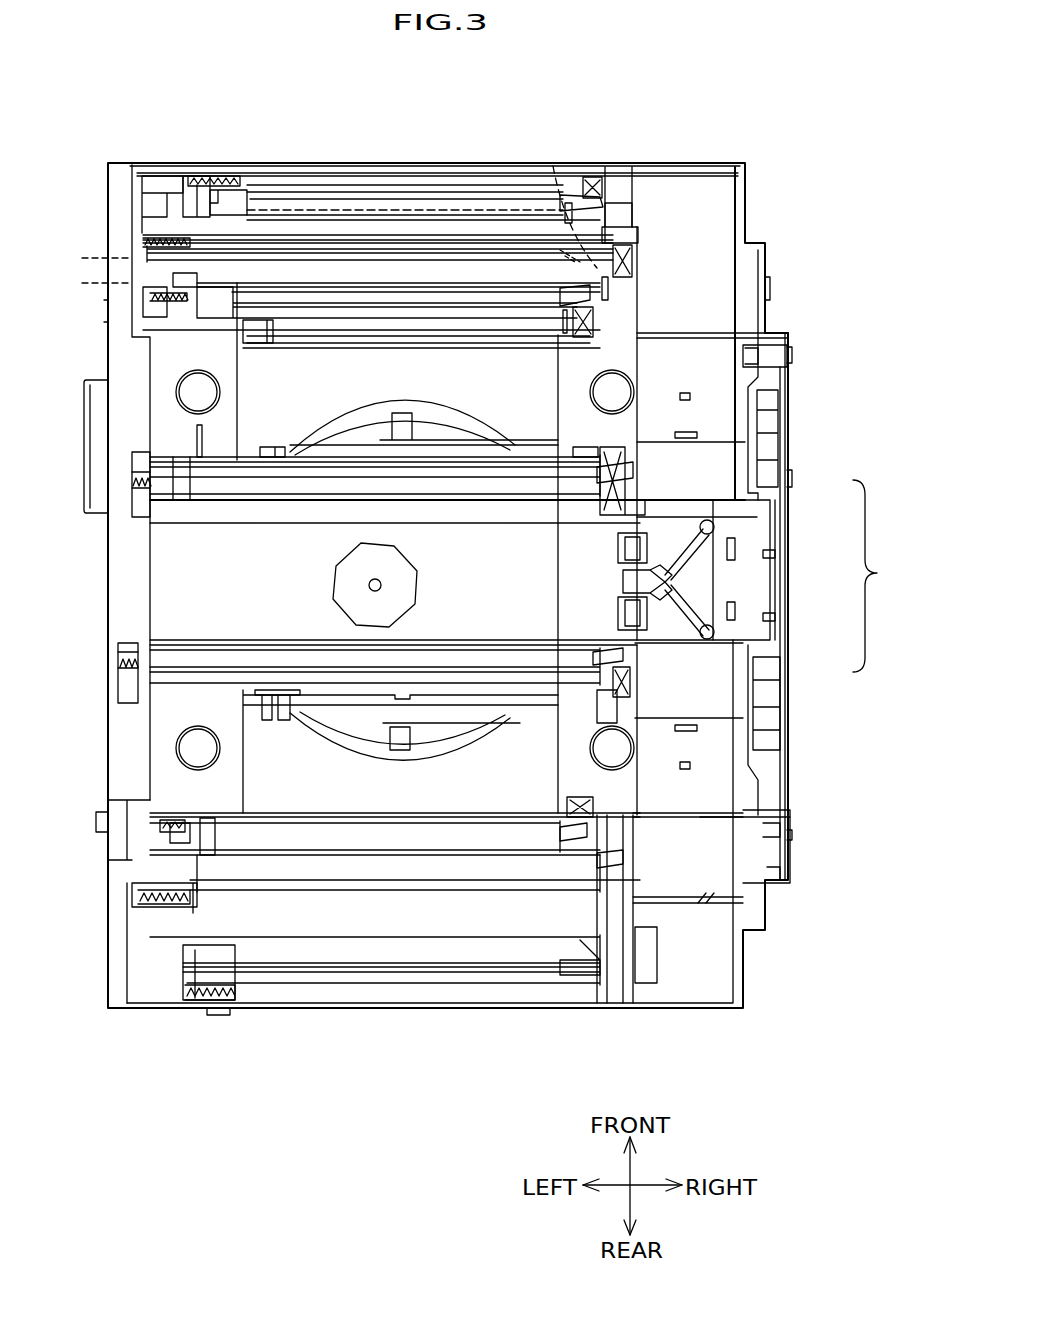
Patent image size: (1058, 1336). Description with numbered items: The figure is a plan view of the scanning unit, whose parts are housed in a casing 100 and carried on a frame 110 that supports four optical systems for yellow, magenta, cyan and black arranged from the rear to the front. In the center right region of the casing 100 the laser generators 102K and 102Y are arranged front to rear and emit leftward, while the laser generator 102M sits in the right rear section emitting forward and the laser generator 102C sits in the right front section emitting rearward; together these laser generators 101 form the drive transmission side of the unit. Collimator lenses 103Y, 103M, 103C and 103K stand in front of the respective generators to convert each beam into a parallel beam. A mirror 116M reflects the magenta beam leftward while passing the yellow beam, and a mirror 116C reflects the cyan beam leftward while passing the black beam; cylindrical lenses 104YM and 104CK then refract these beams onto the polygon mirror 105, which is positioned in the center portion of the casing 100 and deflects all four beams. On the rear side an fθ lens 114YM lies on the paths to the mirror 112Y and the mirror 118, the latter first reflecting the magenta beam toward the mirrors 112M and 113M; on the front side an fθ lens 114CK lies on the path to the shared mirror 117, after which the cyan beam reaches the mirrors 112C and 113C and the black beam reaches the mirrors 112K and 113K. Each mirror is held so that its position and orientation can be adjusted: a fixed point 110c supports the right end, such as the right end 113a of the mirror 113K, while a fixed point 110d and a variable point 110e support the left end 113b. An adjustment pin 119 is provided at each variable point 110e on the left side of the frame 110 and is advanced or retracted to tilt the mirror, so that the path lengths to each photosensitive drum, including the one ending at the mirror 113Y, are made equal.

The casing 100 is at (473, 126).
The laser generators 101 is at (885, 576).
The laser generator 102C is at (760, 420).
The laser generator 102K is at (787, 541).
The laser generator 102Y is at (787, 608).
The laser generator 102M is at (700, 742).
The collimator lens 103C is at (685, 432).
The collimator lens 103K is at (730, 540).
The collimator lens 103Y is at (680, 645).
The collimator lens 103M is at (680, 735).
The cylindrical lens 104CK is at (643, 553).
The cylindrical lens 104YM is at (635, 610).
The polygon mirror 105 is at (355, 580).
The frame 110 is at (100, 707).
The fixed point 110c is at (556, 162).
The fixed point 110d is at (81, 282).
The variable point 110e is at (81, 254).
The mirror 112K is at (365, 185).
The mirror 112C is at (441, 300).
The mirror 112M is at (452, 840).
The mirror 112Y is at (360, 995).
The mirror 113K is at (295, 270).
The mirror 113C is at (493, 478).
The mirror 113M is at (455, 720).
The mirror 113Y is at (365, 862).
The right end 113a is at (597, 268).
The left end 113b is at (160, 265).
The fθ lens 114CK is at (338, 430).
The fθ lens 114YM is at (320, 727).
The mirror 116C is at (697, 479).
The mirror 116M is at (689, 680).
The mirror 117 is at (365, 330).
The mirror 118 is at (512, 818).
The adjustment pin 119 is at (188, 180).